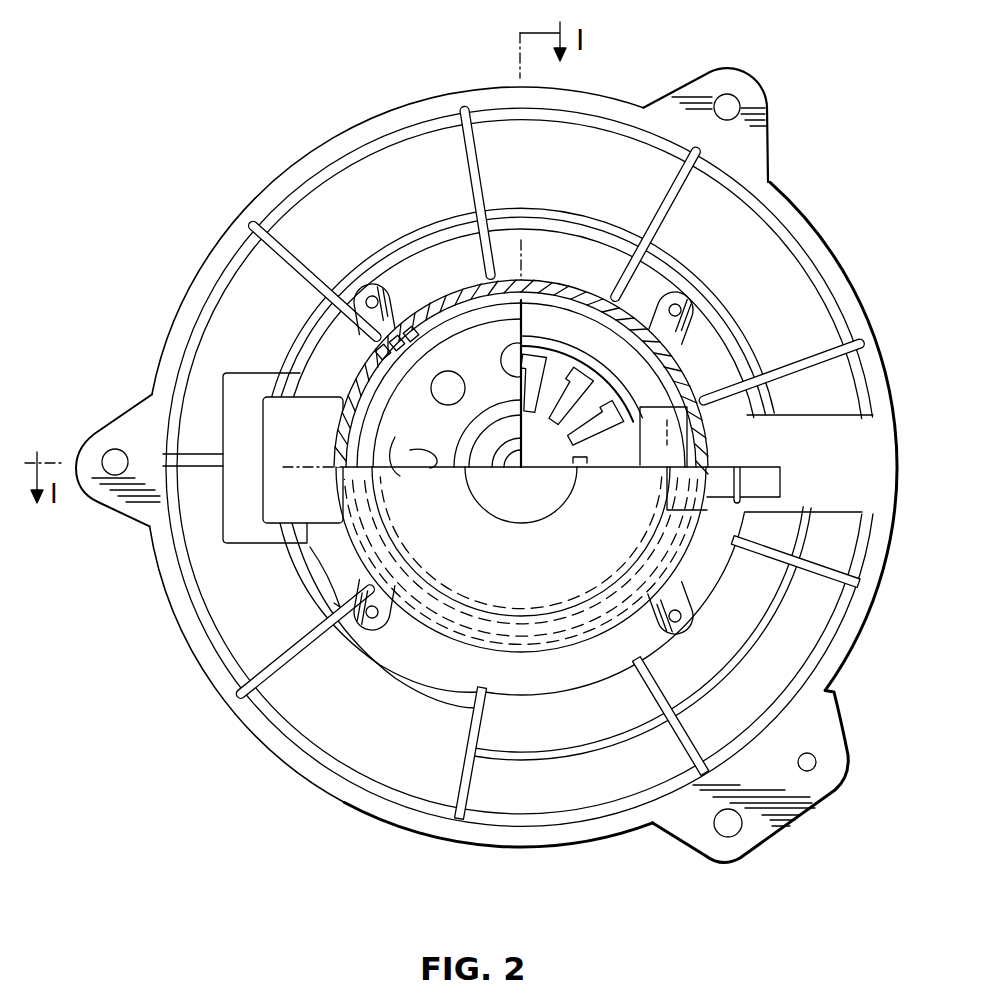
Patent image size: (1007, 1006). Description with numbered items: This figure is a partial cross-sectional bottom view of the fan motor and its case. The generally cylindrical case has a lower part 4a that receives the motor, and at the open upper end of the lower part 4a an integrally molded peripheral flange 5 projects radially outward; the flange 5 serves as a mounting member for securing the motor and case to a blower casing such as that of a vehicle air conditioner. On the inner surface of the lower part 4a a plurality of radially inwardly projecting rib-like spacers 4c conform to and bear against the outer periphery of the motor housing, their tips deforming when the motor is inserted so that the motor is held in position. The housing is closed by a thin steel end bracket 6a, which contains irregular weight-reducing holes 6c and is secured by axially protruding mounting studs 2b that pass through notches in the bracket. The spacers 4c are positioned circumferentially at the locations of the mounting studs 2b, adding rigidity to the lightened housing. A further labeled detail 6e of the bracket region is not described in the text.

The peripheral flange 5 is at (190, 290).
The lower part 4a is at (450, 262).
The rib-like spacers 4c is at (410, 323).
The mounting studs 2b is at (366, 348).
The irregular holes 6c is at (431, 388).
The terminals 6e is at (428, 340).
The end bracket 6a is at (418, 466).